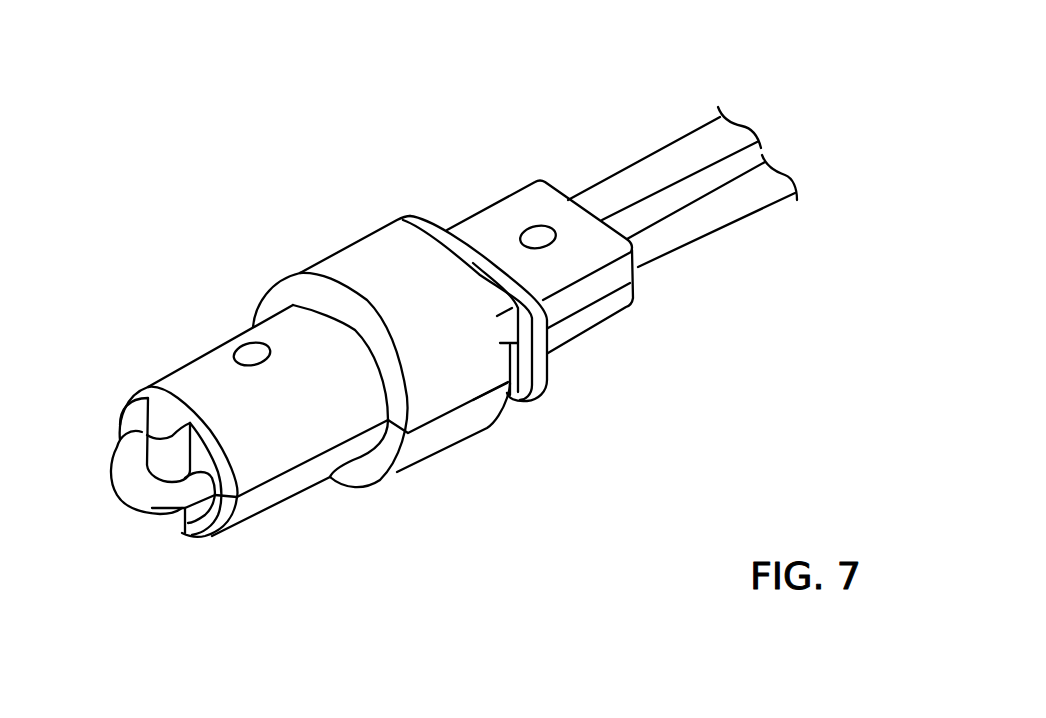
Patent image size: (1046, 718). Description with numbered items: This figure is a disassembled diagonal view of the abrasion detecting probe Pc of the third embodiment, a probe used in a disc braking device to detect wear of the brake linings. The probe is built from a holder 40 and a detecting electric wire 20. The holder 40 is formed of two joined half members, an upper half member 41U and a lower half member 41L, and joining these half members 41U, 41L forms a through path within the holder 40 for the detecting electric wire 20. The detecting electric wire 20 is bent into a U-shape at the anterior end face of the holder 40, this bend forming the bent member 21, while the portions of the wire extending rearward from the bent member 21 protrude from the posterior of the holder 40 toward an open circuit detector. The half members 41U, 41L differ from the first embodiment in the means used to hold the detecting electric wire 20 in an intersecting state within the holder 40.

The abrasion detecting probe Pc is at (248, 192).
The holder 40 is at (172, 340).
The upper half member 41U is at (345, 283).
The lower half member 41L is at (442, 442).
The bent member 21 is at (125, 477).
The detecting electric wire 20 is at (767, 233).